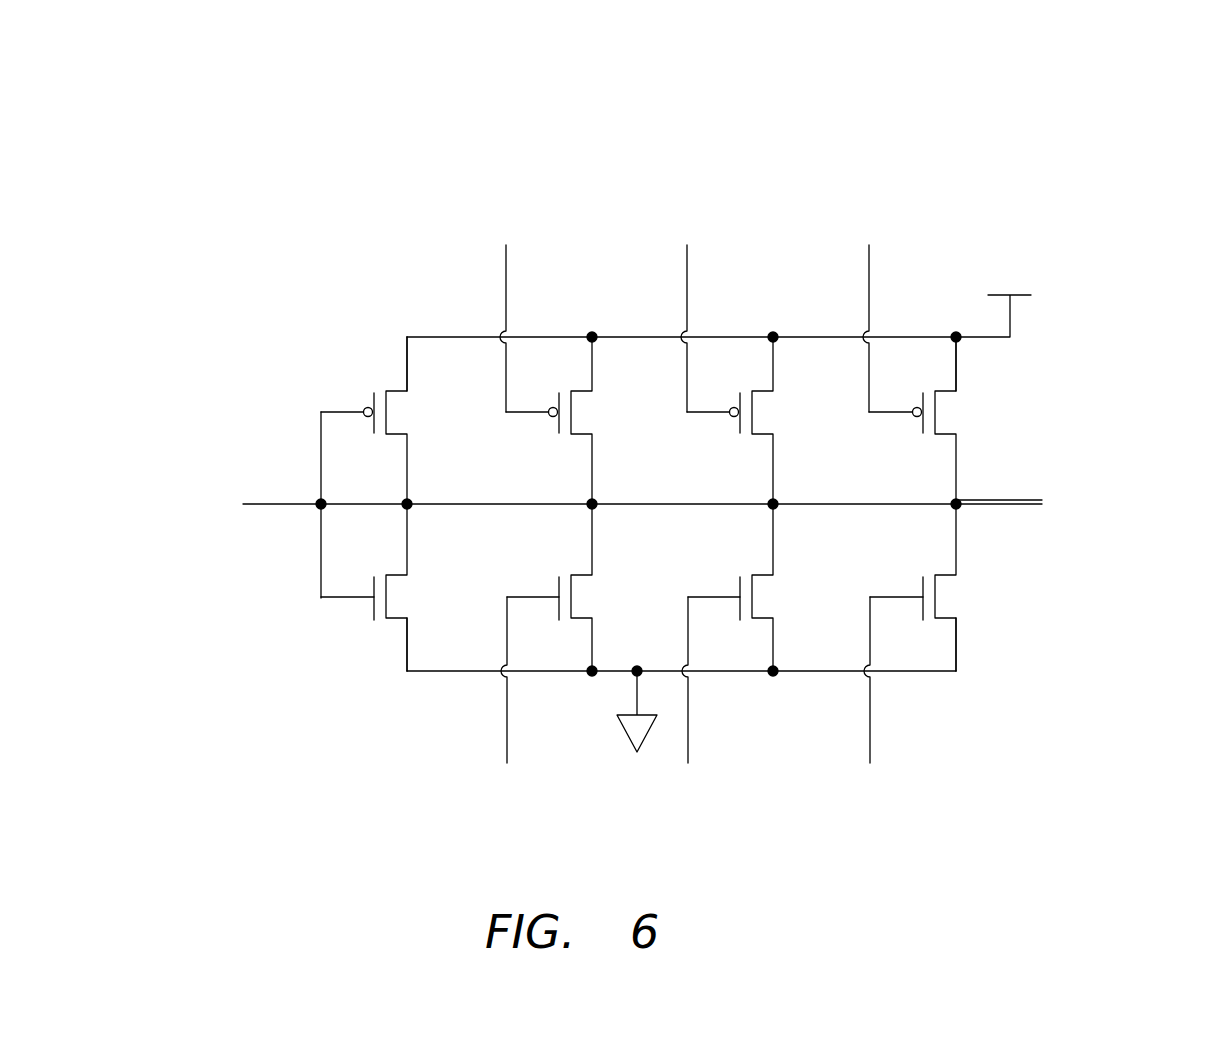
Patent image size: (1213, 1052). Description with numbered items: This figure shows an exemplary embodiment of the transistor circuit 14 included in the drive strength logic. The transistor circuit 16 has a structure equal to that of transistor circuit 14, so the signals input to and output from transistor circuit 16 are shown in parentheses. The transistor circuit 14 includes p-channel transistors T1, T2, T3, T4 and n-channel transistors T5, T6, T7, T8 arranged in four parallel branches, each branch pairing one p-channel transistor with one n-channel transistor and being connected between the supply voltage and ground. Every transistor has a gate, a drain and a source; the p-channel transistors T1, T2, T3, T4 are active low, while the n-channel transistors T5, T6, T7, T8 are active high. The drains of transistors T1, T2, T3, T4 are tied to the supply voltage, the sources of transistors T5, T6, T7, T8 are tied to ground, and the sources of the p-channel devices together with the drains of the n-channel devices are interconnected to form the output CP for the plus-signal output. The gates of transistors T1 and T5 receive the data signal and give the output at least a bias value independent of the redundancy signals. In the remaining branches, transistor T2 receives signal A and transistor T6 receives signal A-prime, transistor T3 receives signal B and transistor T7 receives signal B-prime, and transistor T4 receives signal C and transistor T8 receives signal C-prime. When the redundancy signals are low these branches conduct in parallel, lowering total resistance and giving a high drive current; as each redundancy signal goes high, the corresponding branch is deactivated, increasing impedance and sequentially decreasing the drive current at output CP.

The transistor circuit 14 is at (1015, 143).
The transistor circuit 16 is at (656, 507).
The p-channel transistor T1 is at (388, 393).
The p-channel transistor T2 is at (573, 393).
The p-channel transistor T3 is at (754, 393).
The p-channel transistor T4 is at (937, 393).
The n-channel transistor T5 is at (388, 578).
The n-channel transistor T6 is at (573, 578).
The n-channel transistor T7 is at (754, 578).
The n-channel transistor T8 is at (937, 578).
The output CP is at (957, 502).